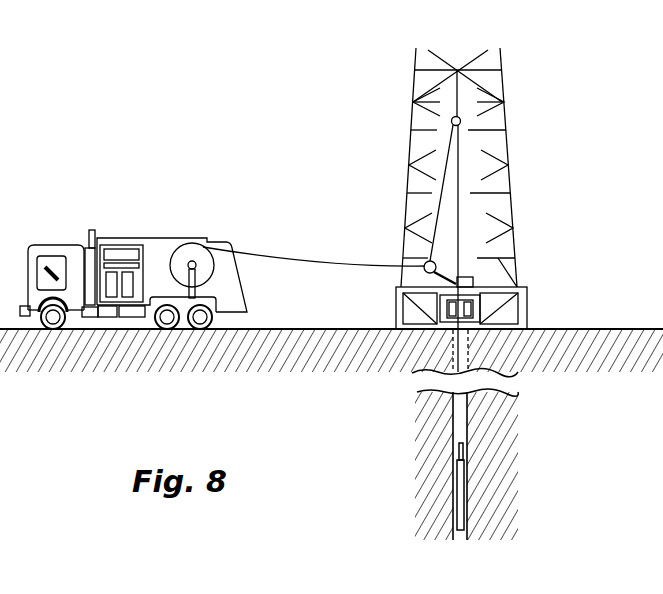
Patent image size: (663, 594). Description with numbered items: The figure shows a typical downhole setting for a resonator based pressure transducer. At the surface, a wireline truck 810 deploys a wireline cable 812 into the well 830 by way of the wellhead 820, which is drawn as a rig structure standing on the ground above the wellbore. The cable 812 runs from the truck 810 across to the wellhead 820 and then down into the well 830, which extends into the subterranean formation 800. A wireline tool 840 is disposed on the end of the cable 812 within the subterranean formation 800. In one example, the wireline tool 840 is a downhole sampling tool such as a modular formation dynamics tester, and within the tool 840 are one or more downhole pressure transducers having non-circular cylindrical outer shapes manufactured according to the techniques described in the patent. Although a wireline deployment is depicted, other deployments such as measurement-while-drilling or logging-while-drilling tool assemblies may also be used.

The subterranean formation 800 is at (393, 528).
The wireline truck 810 is at (170, 238).
The wireline cable 812 is at (299, 262).
The wellhead 820 is at (558, 276).
The well 830 is at (453, 441).
The wireline tool 840 is at (464, 495).